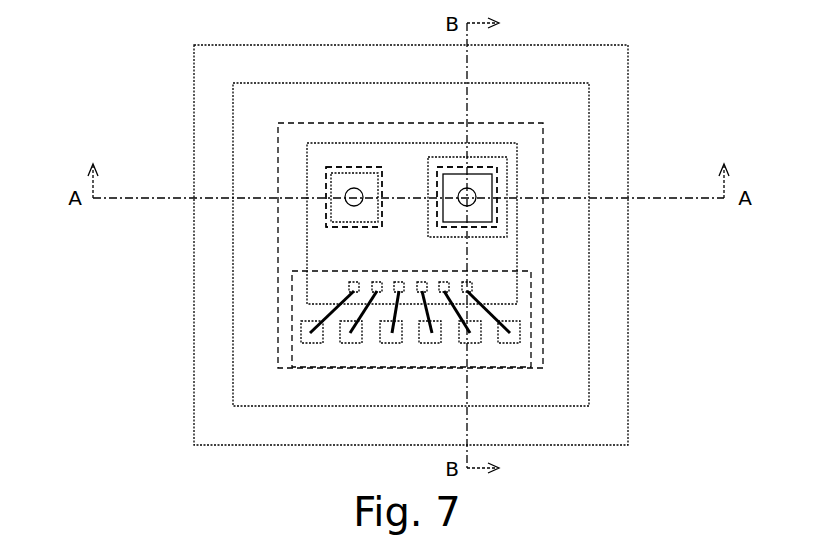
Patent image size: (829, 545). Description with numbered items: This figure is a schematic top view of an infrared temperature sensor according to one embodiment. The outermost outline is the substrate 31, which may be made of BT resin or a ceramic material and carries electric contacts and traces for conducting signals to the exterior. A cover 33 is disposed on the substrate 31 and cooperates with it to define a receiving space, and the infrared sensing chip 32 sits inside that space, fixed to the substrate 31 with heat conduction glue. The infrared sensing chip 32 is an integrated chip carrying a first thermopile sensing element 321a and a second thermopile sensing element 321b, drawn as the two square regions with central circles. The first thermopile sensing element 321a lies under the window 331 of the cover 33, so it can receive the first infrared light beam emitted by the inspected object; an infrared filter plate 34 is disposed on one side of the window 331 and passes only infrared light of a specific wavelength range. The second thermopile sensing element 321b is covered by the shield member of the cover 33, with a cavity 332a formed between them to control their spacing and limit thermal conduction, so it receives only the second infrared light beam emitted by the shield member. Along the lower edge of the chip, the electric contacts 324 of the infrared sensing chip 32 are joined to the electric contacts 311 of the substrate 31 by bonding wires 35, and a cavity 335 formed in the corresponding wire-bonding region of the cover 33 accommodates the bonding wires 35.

The substrate 31 is at (614, 103).
The cover 33 is at (253, 112).
The infrared sensing chip 32 is at (313, 247).
The infrared filter plate 34 is at (505, 228).
The bonding wires 35 is at (495, 315).
The second thermopile sensing element 321b is at (348, 193).
The first thermopile sensing element 321a is at (473, 188).
The cavity 332a is at (326, 210).
The window 331 is at (497, 208).
The cavity 335 is at (292, 287).
The electric contacts 324 is at (350, 288).
The electric contacts 311 is at (512, 333).